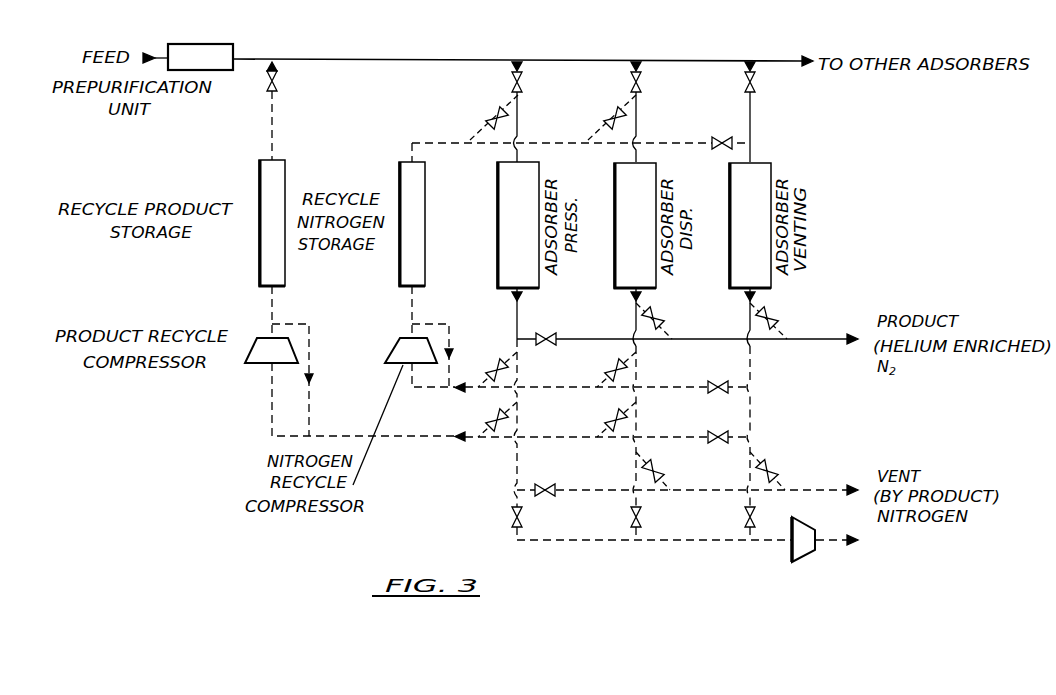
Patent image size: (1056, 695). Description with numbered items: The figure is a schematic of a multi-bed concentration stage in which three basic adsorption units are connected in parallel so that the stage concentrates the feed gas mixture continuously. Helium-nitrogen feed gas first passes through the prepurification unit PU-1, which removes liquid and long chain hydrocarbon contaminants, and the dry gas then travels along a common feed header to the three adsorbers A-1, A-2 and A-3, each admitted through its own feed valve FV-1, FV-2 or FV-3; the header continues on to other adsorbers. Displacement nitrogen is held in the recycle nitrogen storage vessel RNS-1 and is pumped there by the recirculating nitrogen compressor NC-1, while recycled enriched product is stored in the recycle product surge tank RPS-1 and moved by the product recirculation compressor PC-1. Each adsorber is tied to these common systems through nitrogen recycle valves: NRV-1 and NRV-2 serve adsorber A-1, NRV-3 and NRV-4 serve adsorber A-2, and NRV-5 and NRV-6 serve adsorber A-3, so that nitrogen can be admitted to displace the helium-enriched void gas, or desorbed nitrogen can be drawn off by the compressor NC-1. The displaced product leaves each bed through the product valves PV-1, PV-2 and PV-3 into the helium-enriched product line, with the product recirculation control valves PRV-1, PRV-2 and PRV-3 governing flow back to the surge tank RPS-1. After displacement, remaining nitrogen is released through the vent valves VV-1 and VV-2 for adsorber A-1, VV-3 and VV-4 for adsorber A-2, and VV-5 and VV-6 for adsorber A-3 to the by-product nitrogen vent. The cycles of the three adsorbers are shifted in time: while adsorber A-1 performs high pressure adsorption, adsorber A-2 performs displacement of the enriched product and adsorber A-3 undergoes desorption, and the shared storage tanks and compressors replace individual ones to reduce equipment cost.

The prepurification unit PU-1 is at (200, 57).
The product recirculation control valve PRV-2 is at (451, 249).
The recycle product surge tank RPS-1 is at (272, 223).
The recycle nitrogen storage vessel RNS-1 is at (412, 224).
The product recirculation compressor PC-1 is at (271, 350).
The recirculating nitrogen compressor NC-1 is at (411, 350).
The feed valve FV-1 is at (542, 112).
The feed valve FV-2 is at (661, 112).
The feed valve FV-3 is at (775, 112).
The nitrogen recycle valve NRV-1 is at (487, 367).
The nitrogen recycle valve NRV-2 is at (470, 117).
The nitrogen recycle valve NRV-3 is at (604, 367).
The nitrogen recycle valve NRV-4 is at (591, 117).
The nitrogen recycle valve NRV-5 is at (714, 380).
The nitrogen recycle valve NRV-6 is at (720, 136).
The adsorber A-1 is at (518, 225).
The adsorber A-2 is at (635, 225).
The adsorber A-3 is at (750, 225).
The product valve PV-1 is at (546, 329).
The product valve PV-2 is at (674, 321).
The product valve PV-3 is at (788, 321).
The product recirculation control valve PRV-1 is at (482, 419).
The product recirculation control valve PRV-3 is at (709, 430).
The vent valve VV-1 is at (542, 481).
The vent valve VV-2 is at (541, 517).
The vent valve VV-3 is at (673, 471).
The vent valve VV-4 is at (657, 517).
The vent valve VV-5 is at (789, 471).
The vent valve VV-6 is at (767, 517).